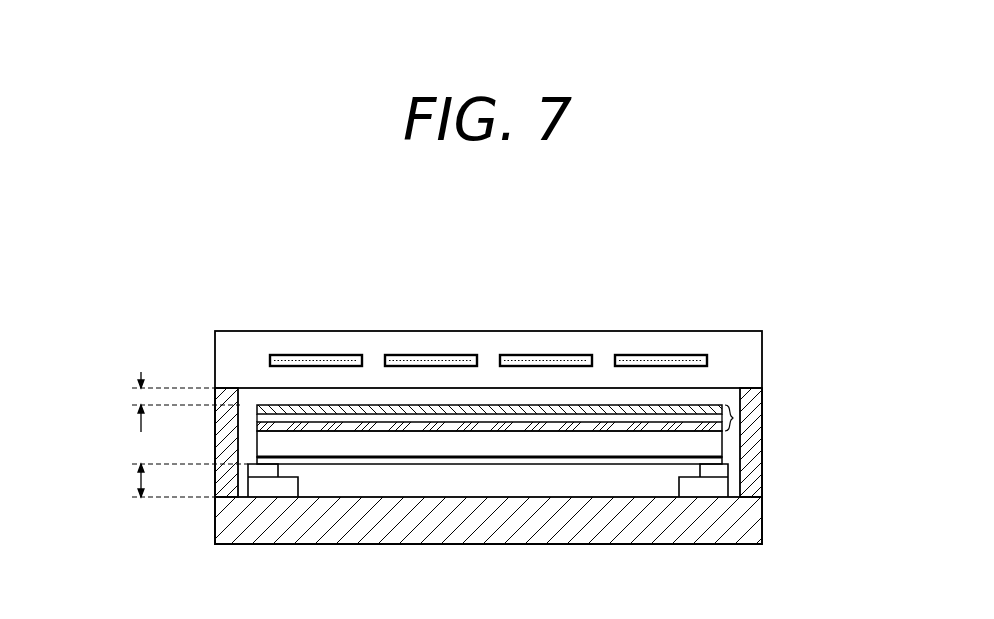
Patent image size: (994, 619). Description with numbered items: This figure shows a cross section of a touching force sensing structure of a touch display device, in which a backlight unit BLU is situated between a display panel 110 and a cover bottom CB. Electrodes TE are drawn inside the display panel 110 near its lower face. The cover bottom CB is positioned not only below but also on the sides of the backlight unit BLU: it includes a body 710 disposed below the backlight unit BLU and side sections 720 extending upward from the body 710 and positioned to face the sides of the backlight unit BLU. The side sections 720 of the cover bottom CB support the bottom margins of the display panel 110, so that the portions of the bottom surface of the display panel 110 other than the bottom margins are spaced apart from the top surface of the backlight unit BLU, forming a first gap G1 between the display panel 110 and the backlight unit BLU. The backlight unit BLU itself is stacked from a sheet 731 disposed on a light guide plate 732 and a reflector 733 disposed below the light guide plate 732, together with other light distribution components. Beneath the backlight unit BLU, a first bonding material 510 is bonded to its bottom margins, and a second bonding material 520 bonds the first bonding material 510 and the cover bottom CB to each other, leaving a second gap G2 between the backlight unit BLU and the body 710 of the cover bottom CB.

The display panel 110 is at (668, 338).
The touch electrode TE is at (707, 360).
The cover bottom CB is at (92, 570).
The side sections 720 is at (224, 450).
The body 710 is at (224, 530).
The backlight unit BLU is at (832, 472).
The sheet 731 is at (731, 417).
The light guide plate 732 is at (718, 443).
The reflector 733 is at (723, 472).
The first bonding material 510 is at (725, 487).
The second bonding material 520 is at (741, 497).
The first gap G1 is at (169, 402).
The second gap G2 is at (173, 480).